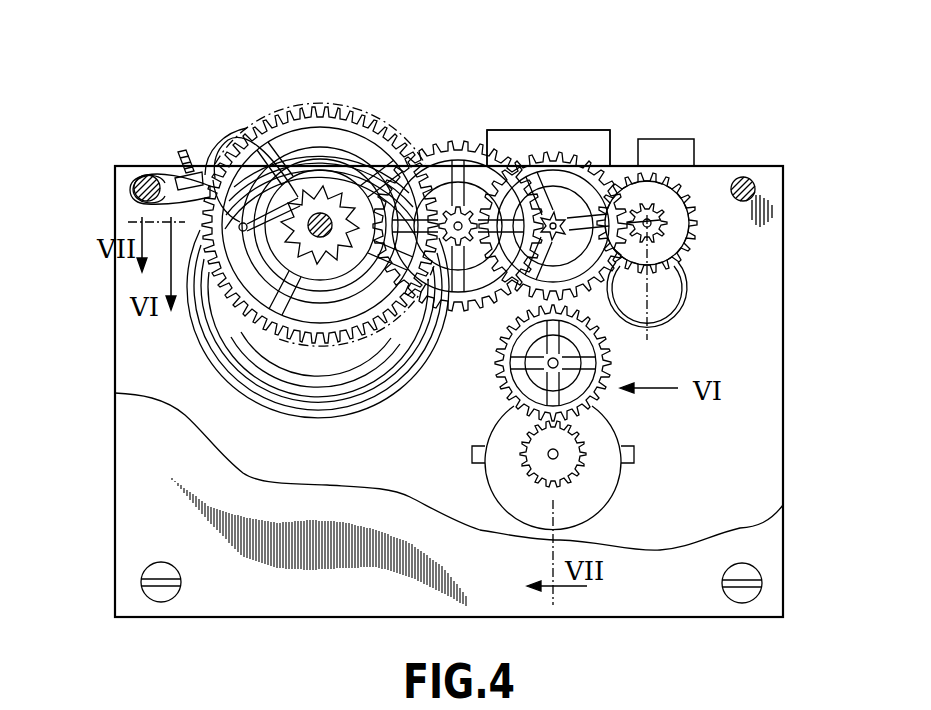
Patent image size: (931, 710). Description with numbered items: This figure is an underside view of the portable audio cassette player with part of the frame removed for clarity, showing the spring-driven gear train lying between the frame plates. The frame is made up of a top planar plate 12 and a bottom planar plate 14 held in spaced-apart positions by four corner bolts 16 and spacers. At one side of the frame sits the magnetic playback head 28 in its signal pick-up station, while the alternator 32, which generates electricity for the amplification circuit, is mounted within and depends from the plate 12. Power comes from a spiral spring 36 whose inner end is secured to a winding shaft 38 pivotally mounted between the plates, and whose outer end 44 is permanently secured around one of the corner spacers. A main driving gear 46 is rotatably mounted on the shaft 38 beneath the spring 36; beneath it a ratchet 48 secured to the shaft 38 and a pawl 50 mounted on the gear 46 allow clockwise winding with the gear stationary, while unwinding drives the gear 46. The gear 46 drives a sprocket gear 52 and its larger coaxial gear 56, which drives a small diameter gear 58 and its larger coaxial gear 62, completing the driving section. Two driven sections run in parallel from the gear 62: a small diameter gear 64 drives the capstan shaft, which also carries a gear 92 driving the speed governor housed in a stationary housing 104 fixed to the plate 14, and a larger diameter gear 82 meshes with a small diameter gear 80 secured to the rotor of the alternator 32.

The top planar plate 12 is at (775, 348).
The bottom planar plate 14 is at (783, 505).
The corner bolts 16 is at (140, 184).
The magnetic playback head 28 is at (563, 220).
The alternator 32 is at (607, 472).
The spiral spring 36 is at (193, 347).
The winding shaft 38 is at (325, 215).
The outer end of the spring 44 is at (143, 165).
The main driving gear 46 is at (312, 107).
The ratchet 48 is at (298, 197).
The pawl 50 is at (240, 224).
The sprocket gear 52 is at (463, 210).
The larger diameter coaxial gear 56 is at (456, 140).
The small diameter gear 58 is at (590, 197).
The larger diameter coaxial gear 62 is at (553, 163).
The small diameter gear 64 is at (660, 220).
The small diameter gear 80 is at (527, 457).
The larger diameter gear 82 is at (493, 372).
The gear 92 is at (688, 181).
The stationary housing 104 is at (687, 290).